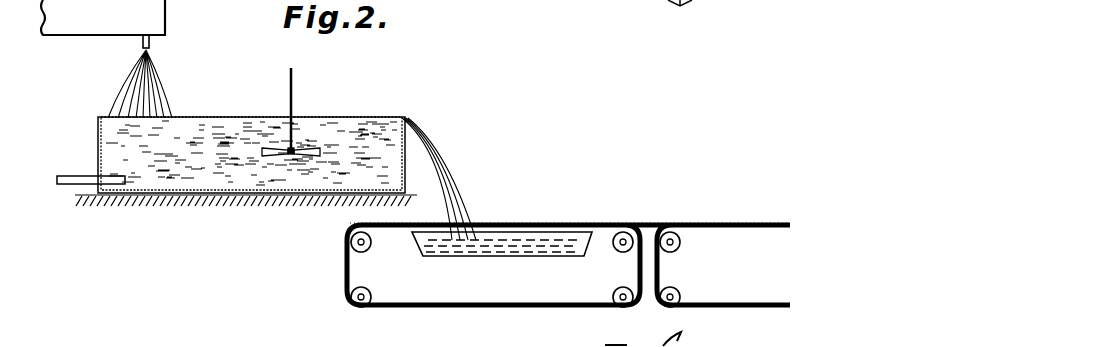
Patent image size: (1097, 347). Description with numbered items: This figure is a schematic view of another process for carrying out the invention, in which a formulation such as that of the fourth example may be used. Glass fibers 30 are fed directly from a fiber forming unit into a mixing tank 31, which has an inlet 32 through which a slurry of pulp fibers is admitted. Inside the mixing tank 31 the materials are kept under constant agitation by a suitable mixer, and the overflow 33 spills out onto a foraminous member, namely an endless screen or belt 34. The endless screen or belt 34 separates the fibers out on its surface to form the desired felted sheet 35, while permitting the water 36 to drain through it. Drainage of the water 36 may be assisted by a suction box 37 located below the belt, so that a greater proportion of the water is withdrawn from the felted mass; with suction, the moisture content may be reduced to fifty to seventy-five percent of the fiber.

The glass fibers 30 is at (155, 84).
The mixing tank 31 is at (108, 150).
The inlet 32 is at (111, 188).
The overflow 33 is at (445, 182).
The endless screen or belt 34 is at (393, 232).
The felted sheet 35 is at (568, 241).
The water 36 is at (502, 264).
The suction box 37 is at (540, 257).